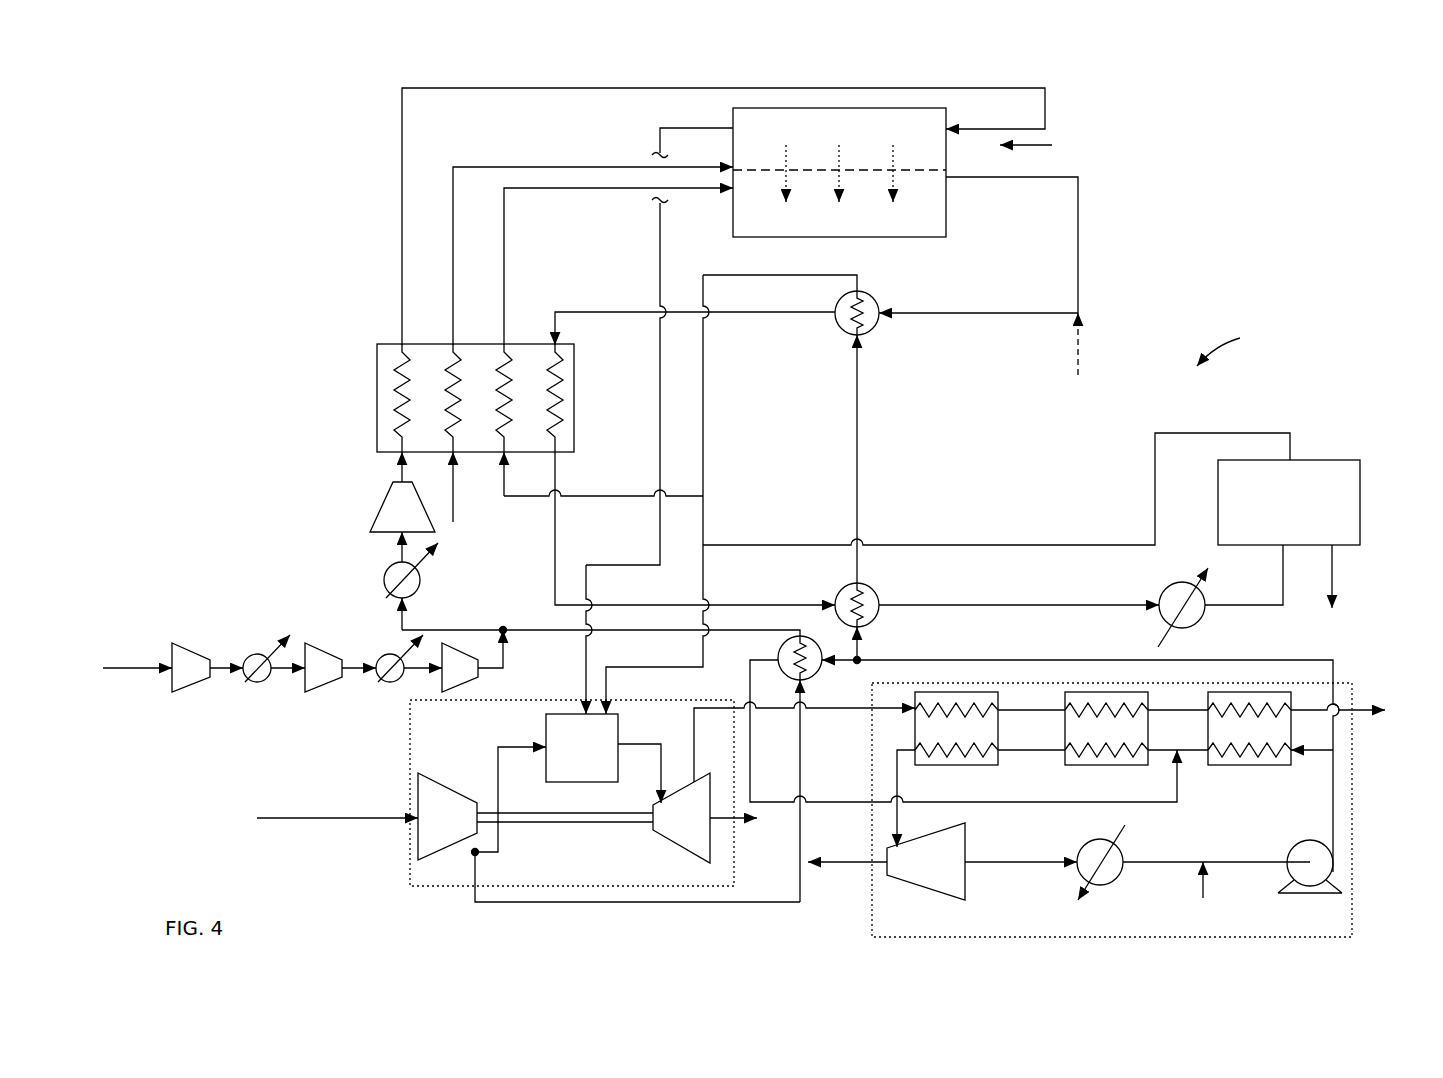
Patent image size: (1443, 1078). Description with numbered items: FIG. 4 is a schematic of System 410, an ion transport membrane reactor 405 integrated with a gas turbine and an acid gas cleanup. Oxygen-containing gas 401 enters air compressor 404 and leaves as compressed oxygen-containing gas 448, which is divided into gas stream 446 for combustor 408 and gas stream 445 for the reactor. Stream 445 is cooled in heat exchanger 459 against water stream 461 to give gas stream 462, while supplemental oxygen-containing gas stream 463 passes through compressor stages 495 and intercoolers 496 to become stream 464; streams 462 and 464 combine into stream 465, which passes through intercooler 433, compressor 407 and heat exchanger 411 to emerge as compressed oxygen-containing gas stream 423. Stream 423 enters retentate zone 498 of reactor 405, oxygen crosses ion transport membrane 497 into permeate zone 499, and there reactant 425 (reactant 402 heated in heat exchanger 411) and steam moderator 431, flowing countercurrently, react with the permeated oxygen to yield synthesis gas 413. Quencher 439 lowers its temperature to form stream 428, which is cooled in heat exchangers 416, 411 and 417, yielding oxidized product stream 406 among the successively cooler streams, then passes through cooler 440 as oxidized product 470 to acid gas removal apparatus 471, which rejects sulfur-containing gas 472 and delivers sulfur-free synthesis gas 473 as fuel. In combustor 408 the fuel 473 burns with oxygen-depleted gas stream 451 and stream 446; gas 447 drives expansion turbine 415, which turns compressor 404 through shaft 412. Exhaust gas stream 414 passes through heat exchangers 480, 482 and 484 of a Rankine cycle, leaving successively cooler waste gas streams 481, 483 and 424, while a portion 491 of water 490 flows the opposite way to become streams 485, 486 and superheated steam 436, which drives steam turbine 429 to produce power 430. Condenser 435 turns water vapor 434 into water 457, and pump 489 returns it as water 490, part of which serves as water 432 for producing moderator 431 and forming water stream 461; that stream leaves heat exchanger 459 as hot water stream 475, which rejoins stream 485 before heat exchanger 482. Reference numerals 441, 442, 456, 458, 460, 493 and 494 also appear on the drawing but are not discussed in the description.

The oxygen-containing gas 401 is at (348, 818).
The reactant 402 is at (454, 501).
The air compressor 404 is at (459, 829).
The ion transport membrane reactor 405 is at (1043, 145).
The oxidized product stream 406 is at (760, 312).
The compressor 407 is at (382, 515).
The combustor 408 is at (594, 757).
The system 410 is at (1238, 341).
The heat exchanger 411 is at (377, 394).
The shaft 412 is at (556, 825).
The synthesis gas 413 is at (997, 178).
The gas stream 414 is at (694, 718).
The expansion turbine 415 is at (699, 829).
The heat exchanger 416 is at (874, 334).
The heat exchanger 417 is at (842, 592).
The compressed oxygen-containing gas stream 423 is at (978, 88).
The waste gas stream 424 is at (1371, 710).
The reactant 425 is at (460, 167).
The oxidized product stream 428 is at (966, 313).
The steam turbine 429 is at (943, 872).
The power 430 is at (838, 874).
The moderator 431 is at (505, 232).
The water 432 is at (1000, 660).
The intercooler 433 is at (384, 582).
The water vapor 434 is at (995, 862).
The condenser 435 is at (1112, 883).
The superheated steam 436 is at (897, 783).
The quencher 439 is at (1072, 370).
The cooler 440 is at (1170, 587).
The conduit 441 is at (858, 437).
The conduit 442 is at (705, 409).
The gas stream 445 is at (620, 902).
The gas stream 446 is at (498, 791).
The gas 447 is at (632, 744).
The compressed oxygen-containing gas 448 is at (472, 854).
The oxygen-depleted gas stream 451 is at (658, 232).
The conduit 456 is at (587, 655).
The water 457 is at (1215, 862).
The inlet conduit 458 is at (1202, 893).
The heat exchanger 459 is at (838, 640).
The junction 460 is at (861, 655).
The water stream 461 is at (822, 678).
The gas stream 462 is at (733, 630).
The supplemental oxygen-containing gas stream 463 is at (128, 668).
The compressed and intercooled oxygen-containing gas stream 464 is at (506, 661).
The compressed, intercooled oxygen-containing gas stream 465 is at (444, 630).
The oxidized product 470 is at (1241, 605).
The acid gas removal apparatus 471 is at (1304, 509).
The stream of gas containing sulfur and other impurities 472 is at (1332, 569).
The sulfur-free synthesis gas 473 is at (1216, 433).
The hot water stream 475 is at (818, 802).
The heat exchanger 480 is at (969, 737).
The waste gas stream 481 is at (1018, 710).
The heat exchanger 482 is at (1119, 737).
The waste gas stream 483 is at (1159, 710).
The heat exchanger 484 is at (1259, 737).
The hot water stream 485 is at (1158, 750).
The hot water stream 486 is at (1030, 750).
The pump 489 is at (1334, 872).
The water 490 is at (1335, 808).
The portion of water 491 is at (1308, 757).
The gas turbine unit 493 is at (440, 886).
The refrigeration unit 494 is at (1245, 937).
The compressor stages 495 is at (222, 666).
The intercoolers 496 is at (257, 652).
The ion transport membrane 497 is at (860, 164).
The retentate zone 498 is at (798, 135).
The permeate zone 499 is at (789, 231).